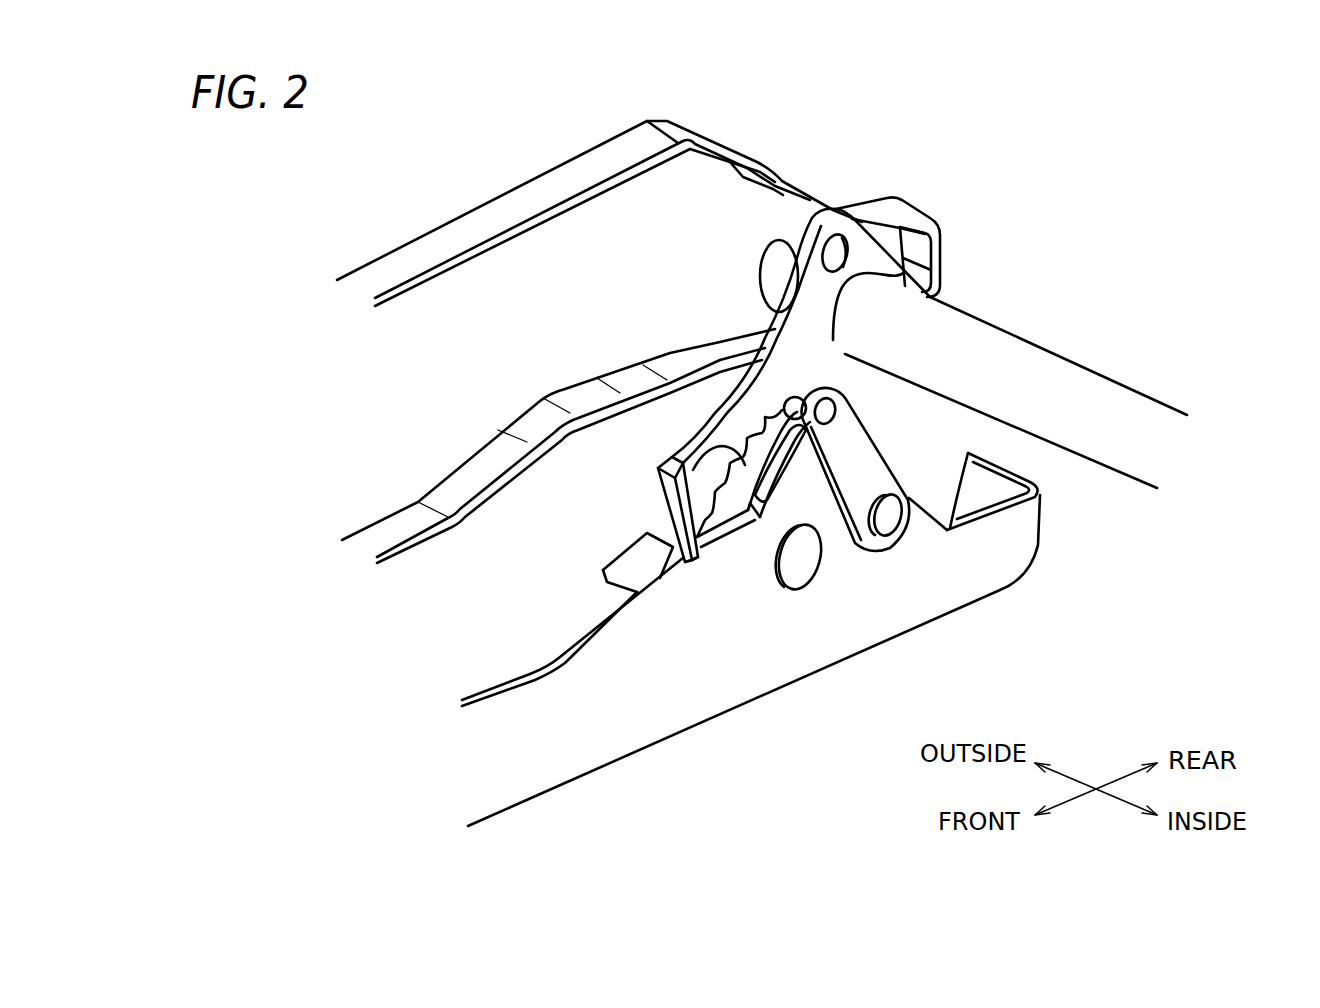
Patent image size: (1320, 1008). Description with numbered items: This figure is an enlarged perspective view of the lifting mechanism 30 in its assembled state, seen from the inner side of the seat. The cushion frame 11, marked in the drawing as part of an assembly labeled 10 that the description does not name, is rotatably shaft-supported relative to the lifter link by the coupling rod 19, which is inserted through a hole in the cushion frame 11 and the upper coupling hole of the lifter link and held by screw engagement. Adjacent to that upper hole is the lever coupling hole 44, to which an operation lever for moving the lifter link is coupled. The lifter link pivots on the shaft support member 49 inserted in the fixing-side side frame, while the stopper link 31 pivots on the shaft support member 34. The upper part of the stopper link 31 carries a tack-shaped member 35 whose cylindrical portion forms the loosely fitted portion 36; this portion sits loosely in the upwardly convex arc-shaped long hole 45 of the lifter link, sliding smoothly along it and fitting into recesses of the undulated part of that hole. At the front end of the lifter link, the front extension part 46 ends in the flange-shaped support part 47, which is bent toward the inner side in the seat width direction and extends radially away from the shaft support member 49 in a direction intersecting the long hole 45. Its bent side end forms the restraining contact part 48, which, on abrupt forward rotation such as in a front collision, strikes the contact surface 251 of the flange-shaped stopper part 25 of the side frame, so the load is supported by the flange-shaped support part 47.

The seat slide device 10 is at (599, 179).
The cushion frame 11 is at (603, 170).
The coupling rod 19 is at (1043, 370).
The stopper part 25 is at (628, 573).
The contact surface 251 is at (643, 565).
The lifting mechanism 30 is at (672, 440).
The stopper link 31 is at (866, 458).
The shaft support member 34 is at (887, 527).
The tack-shaped member 35 is at (783, 248).
The loosely fitted portion 36 is at (803, 388).
The lever coupling hole 44 is at (832, 253).
The long hole 45 is at (697, 467).
The front extension part 46 is at (663, 457).
The flange-shaped support part 47 is at (663, 500).
The restraining contact part 48 is at (682, 567).
The shaft support member 49 is at (795, 573).